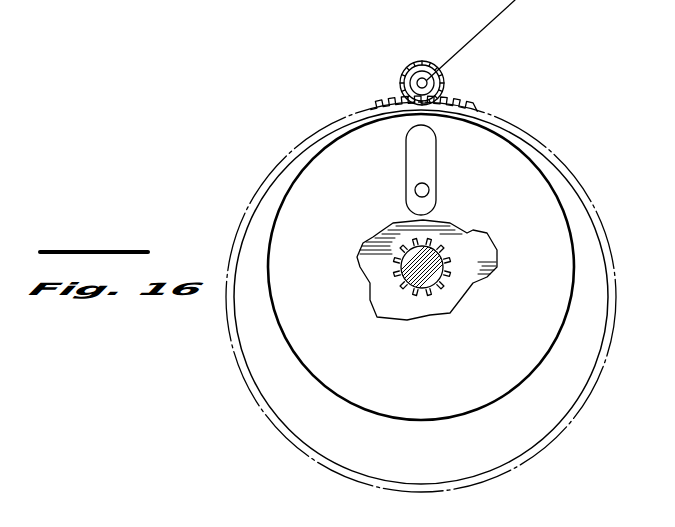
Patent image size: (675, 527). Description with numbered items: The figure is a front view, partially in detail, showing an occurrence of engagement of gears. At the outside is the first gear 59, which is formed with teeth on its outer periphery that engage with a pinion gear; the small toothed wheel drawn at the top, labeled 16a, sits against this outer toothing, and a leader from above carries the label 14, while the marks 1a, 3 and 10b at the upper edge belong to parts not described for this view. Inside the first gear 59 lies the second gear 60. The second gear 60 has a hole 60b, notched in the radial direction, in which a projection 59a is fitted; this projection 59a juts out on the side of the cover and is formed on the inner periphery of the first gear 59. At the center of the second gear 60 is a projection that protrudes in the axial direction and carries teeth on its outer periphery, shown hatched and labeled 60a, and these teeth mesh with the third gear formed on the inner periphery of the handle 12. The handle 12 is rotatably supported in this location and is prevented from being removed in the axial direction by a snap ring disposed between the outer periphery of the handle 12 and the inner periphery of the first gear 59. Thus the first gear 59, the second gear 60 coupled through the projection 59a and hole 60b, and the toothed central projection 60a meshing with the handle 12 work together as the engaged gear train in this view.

The housing part 1a is at (139, 0).
The cover 3 is at (228, 0).
The drive shaft 10b is at (349, 0).
The gear 14 is at (448, 0).
The pinion 16a is at (425, 84).
The hole 60b is at (433, 137).
The projection 59a is at (426, 188).
The second gear 60 is at (535, 185).
The handle 12 is at (378, 244).
The toothed hub 60a is at (408, 271).
The first gear 59 is at (522, 435).